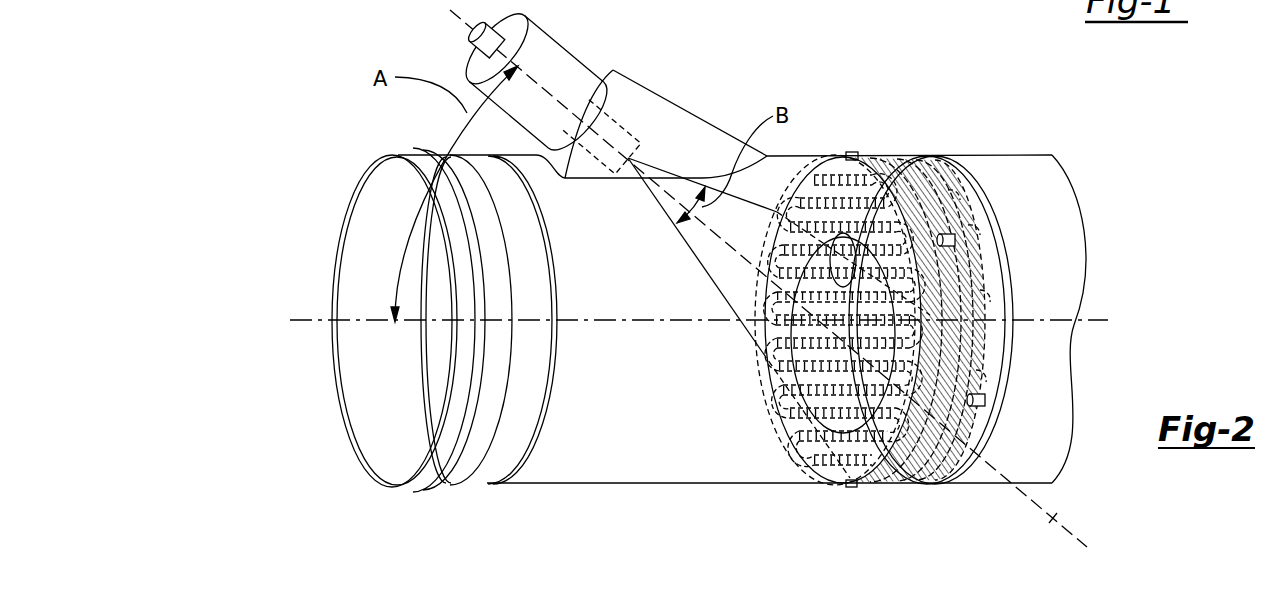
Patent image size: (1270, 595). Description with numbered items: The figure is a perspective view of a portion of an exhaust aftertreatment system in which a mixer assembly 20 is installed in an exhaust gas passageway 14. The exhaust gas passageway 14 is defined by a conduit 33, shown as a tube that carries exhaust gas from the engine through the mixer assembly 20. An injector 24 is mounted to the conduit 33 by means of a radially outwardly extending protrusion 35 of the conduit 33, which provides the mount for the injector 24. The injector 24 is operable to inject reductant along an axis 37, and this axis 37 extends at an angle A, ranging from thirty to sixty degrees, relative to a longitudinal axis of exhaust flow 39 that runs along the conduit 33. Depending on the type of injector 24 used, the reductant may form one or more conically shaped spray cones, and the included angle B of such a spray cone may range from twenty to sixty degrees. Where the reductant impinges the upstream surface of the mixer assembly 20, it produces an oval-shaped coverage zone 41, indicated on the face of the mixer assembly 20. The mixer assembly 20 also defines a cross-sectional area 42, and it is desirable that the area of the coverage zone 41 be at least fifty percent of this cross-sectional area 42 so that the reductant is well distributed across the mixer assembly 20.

The exhaust gas passageway 14 is at (437, 363).
The mixer assembly 20 is at (853, 275).
The injector 24 is at (556, 46).
The conduit 33 is at (557, 486).
The radially outwardly extending protrusion 35 is at (653, 93).
The axis 37 is at (1090, 322).
The longitudinal axis of exhaust flow 39 is at (1058, 512).
The coverage zone 41 is at (763, 353).
The cross-sectional area 42 is at (844, 320).